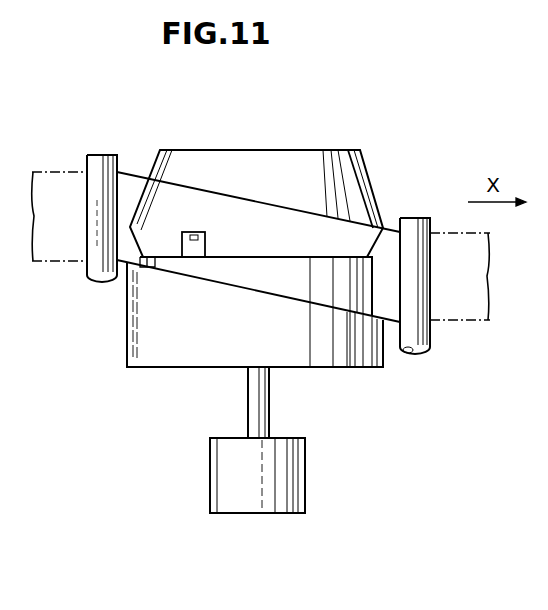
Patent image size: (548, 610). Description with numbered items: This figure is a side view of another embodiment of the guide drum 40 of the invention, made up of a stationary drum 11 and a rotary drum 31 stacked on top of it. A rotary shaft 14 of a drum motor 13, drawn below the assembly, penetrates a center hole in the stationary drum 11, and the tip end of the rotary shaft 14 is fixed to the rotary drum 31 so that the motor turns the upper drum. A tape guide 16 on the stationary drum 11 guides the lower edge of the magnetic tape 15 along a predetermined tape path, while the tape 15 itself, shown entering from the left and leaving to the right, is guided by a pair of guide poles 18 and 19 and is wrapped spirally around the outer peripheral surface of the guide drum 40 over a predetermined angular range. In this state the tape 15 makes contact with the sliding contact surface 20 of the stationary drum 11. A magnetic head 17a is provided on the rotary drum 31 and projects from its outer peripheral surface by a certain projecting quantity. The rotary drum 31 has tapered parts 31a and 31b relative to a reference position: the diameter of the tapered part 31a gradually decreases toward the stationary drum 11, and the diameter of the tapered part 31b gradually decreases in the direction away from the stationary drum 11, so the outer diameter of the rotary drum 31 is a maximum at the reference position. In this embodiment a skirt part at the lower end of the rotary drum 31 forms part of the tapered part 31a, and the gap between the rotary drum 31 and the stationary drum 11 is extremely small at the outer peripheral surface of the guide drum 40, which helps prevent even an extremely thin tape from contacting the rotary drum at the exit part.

The stationary drum 11 is at (174, 354).
The drum motor 13 is at (220, 487).
The rotary shaft 14 is at (247, 414).
The magnetic tape 15 is at (50, 170).
The tape guide 16 is at (299, 305).
The magnetic head 17a is at (196, 232).
The guide pole 18 is at (100, 157).
The guide pole 19 is at (420, 338).
The sliding contact surface 20 is at (342, 268).
The rotary drum 31 is at (330, 162).
The tapered part 31a is at (135, 246).
The tapered part 31b is at (368, 177).
The guide drum 40 is at (287, 148).